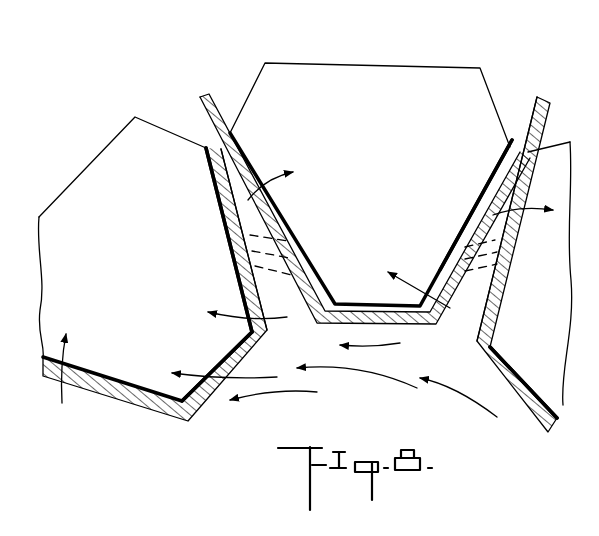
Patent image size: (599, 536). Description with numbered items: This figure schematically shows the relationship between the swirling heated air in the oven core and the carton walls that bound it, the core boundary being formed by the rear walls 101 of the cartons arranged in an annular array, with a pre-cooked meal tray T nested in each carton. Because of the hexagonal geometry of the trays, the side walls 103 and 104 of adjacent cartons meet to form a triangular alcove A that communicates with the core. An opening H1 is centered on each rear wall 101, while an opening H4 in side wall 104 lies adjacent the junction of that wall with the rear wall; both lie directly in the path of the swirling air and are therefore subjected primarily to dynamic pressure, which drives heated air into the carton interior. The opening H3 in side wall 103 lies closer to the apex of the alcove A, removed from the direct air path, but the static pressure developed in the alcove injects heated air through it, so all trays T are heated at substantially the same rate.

The tray T is at (467, 80).
The rear wall 101 is at (330, 325).
The side wall 103 is at (293, 257).
The side wall 104 is at (240, 243).
The opening H1 is at (498, 373).
The opening H3 is at (262, 208).
The opening H4 is at (450, 277).
The triangular alcove A is at (301, 343).